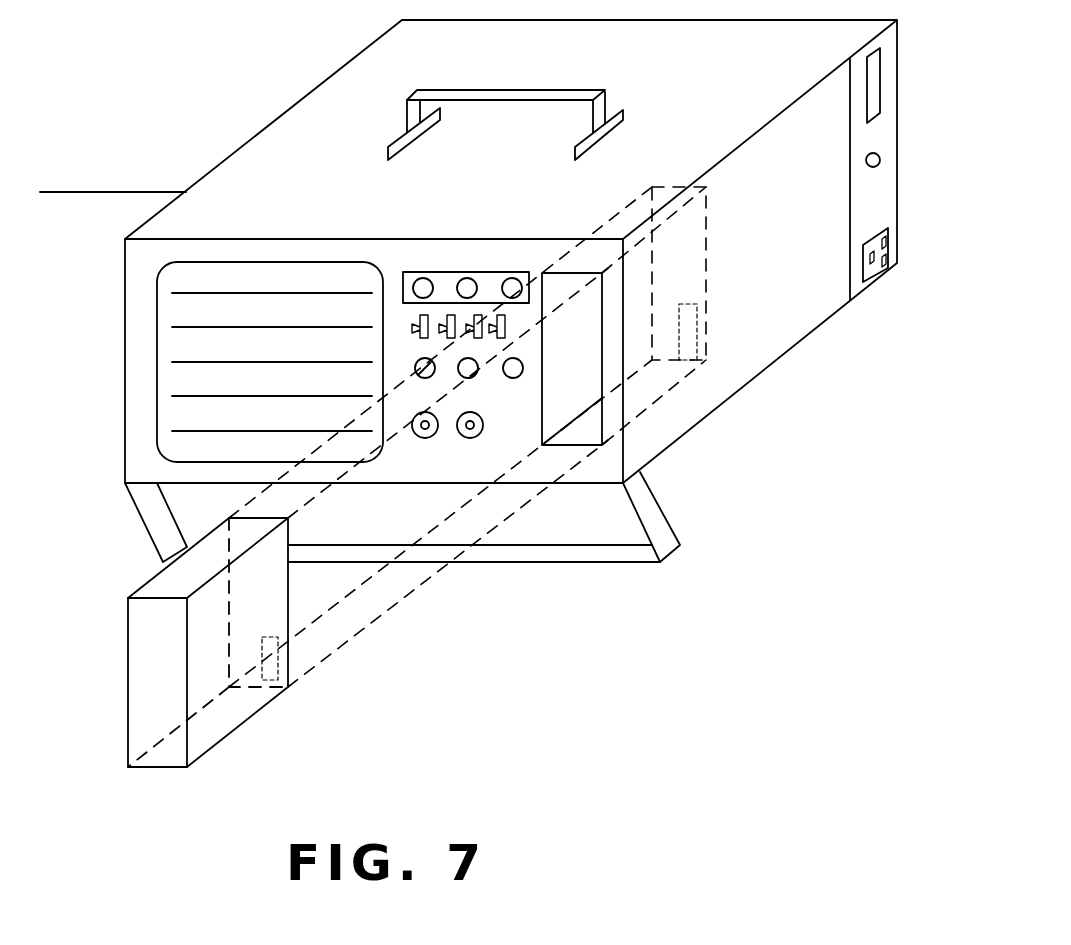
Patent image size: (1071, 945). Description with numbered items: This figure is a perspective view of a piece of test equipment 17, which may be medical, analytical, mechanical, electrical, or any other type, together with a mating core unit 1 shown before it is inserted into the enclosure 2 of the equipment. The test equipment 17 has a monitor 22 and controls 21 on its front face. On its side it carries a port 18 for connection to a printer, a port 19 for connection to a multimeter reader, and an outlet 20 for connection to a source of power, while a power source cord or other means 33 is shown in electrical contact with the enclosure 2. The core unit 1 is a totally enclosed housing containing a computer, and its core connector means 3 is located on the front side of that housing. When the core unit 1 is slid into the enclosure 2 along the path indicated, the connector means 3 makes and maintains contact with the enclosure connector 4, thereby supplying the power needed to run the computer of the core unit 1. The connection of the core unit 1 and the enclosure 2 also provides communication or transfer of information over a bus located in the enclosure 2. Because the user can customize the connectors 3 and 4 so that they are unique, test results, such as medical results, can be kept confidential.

The core unit 1 is at (252, 713).
The enclosure 2 is at (667, 394).
The core connector means 3 is at (280, 662).
The enclosure connector 4 is at (703, 330).
The test equipment 17 is at (325, 82).
The port 18 is at (880, 80).
The port 19 is at (880, 160).
The outlet 20 is at (888, 246).
The controls 21 is at (460, 272).
The monitor 22 is at (157, 358).
The power source cord 33 is at (107, 192).